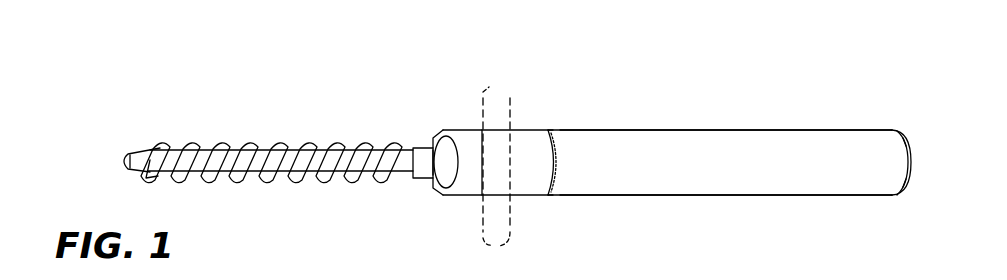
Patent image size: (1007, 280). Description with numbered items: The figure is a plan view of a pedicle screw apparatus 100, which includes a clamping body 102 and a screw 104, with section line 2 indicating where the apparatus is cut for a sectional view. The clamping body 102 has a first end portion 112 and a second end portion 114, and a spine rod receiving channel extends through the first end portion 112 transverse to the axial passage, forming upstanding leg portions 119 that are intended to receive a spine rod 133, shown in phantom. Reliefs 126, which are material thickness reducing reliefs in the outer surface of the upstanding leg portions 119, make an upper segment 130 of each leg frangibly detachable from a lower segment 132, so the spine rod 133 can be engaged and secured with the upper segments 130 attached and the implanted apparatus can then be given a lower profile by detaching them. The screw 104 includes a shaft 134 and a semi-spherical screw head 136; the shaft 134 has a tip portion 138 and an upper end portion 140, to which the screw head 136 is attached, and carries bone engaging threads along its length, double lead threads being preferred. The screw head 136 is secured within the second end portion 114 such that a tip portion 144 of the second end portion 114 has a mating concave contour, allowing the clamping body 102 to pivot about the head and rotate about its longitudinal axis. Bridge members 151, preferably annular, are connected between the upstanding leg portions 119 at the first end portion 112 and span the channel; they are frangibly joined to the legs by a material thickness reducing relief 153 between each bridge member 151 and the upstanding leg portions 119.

The section line 2- 2 is at (112, 160).
The pedicle screw apparatus 100 is at (308, 121).
The clamping body 102 is at (565, 130).
The screw 104 is at (268, 182).
The first end portion 112 is at (858, 195).
The second end portion 114 is at (442, 130).
The upstanding leg portions 119 is at (592, 135).
The reliefs 126 is at (550, 130).
The upper segment 130 is at (592, 195).
The lower segment 132 is at (529, 195).
The spine rod 133 is at (497, 88).
The shaft 134 is at (243, 150).
The screw head 136 is at (440, 180).
The tip portion 138 is at (138, 150).
The upper end portion 140 is at (420, 150).
The tip portion of the second end portion 144 is at (450, 176).
The bridge members 151 is at (907, 140).
The material thickness reducing relief 153 is at (902, 166).